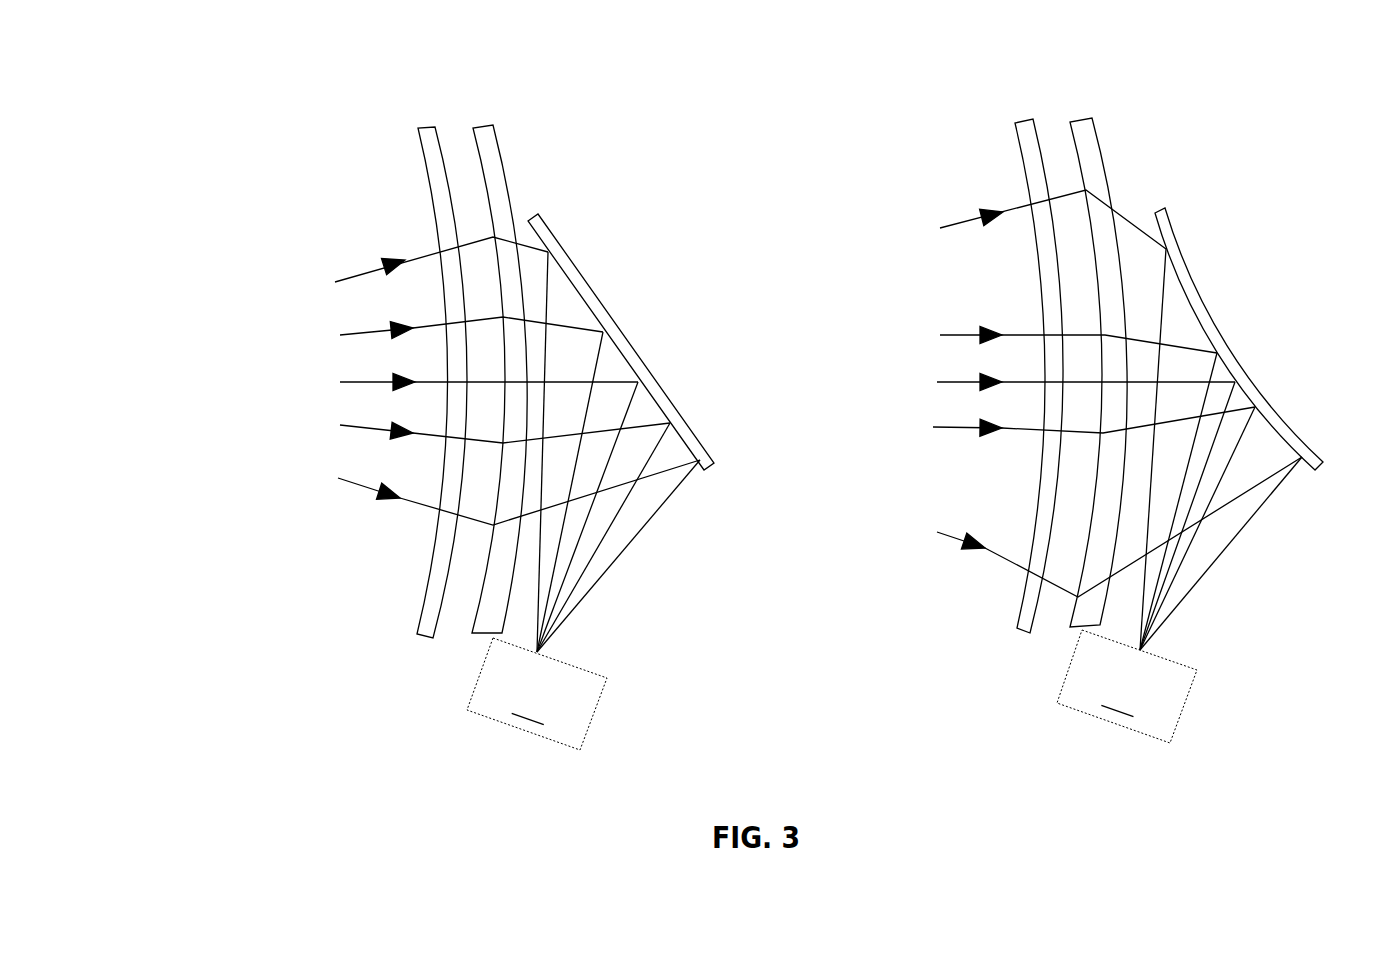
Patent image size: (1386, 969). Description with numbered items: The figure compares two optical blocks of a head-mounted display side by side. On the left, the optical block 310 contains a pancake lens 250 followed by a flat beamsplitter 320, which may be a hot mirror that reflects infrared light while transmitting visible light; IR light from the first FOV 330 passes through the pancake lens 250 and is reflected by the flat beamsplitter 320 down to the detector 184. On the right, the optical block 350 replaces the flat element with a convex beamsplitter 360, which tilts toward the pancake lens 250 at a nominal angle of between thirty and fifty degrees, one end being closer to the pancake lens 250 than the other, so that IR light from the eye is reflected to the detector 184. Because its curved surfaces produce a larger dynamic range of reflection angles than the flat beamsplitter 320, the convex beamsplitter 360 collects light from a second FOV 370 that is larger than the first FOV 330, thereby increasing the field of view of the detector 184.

The optical block 310 is at (450, 25).
The optical block 350 is at (1048, 25).
The pancake lens 250 is at (1092, 115).
The flat beamsplitter 320 is at (547, 232).
The convex beamsplitter 360 is at (1172, 238).
The first FOV 330 is at (332, 483).
The second FOV 370 is at (932, 533).
The detector 184 is at (832, 690).